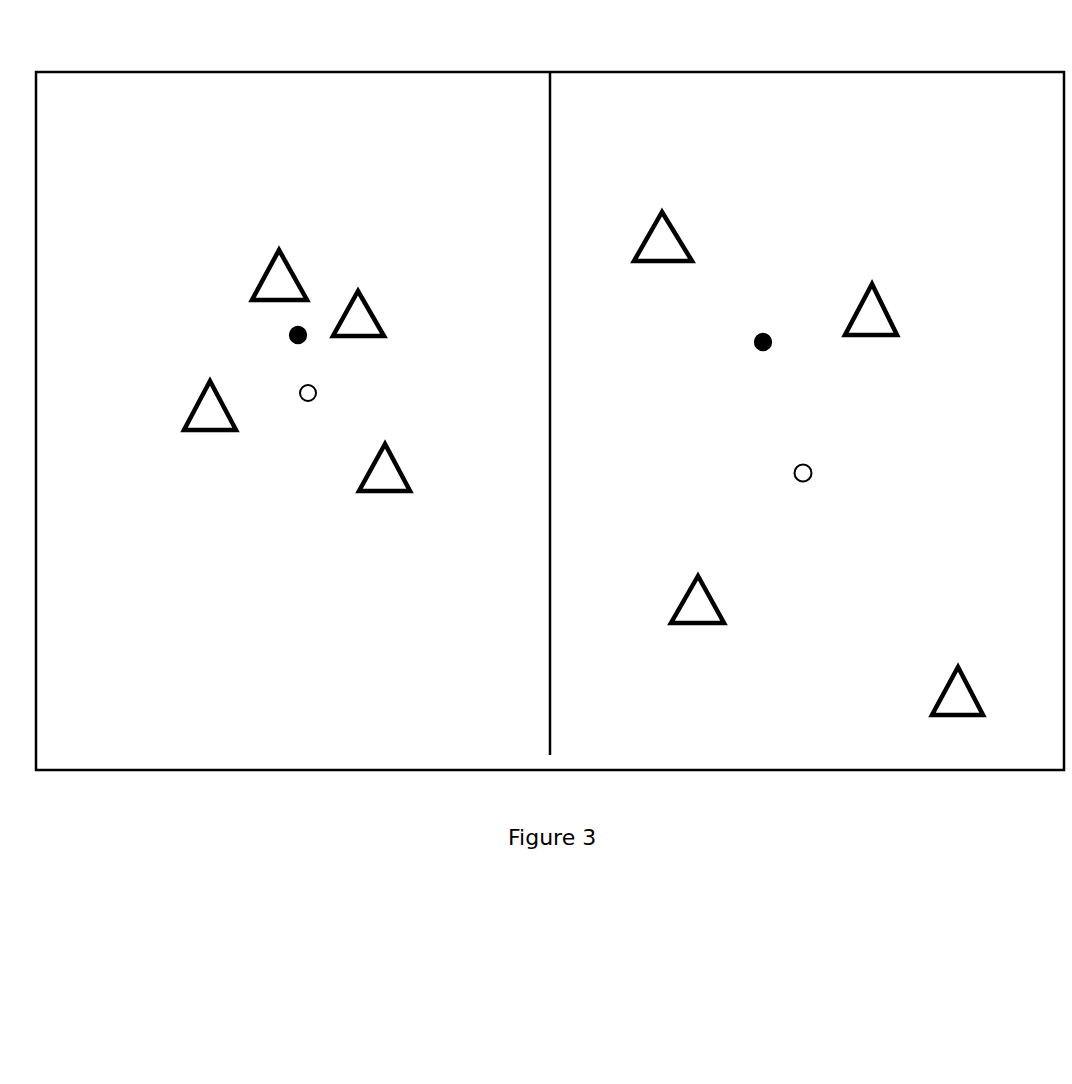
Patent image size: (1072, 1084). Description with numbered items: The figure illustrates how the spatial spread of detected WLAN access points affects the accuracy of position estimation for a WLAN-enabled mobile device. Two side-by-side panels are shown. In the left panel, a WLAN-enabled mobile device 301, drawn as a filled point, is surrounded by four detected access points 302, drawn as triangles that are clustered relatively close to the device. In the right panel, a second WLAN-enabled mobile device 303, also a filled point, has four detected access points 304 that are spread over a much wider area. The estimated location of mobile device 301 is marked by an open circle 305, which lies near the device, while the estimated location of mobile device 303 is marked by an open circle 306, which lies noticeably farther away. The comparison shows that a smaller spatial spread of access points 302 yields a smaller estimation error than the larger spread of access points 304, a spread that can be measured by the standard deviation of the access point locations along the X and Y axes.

The WLAN-enabled mobile device 301 is at (271, 335).
The detected access points 302 is at (295, 386).
The WLAN-enabled mobile device 303 is at (735, 341).
The detected access points 304 is at (834, 477).
The circle 305 is at (336, 397).
The circle 306 is at (833, 478).